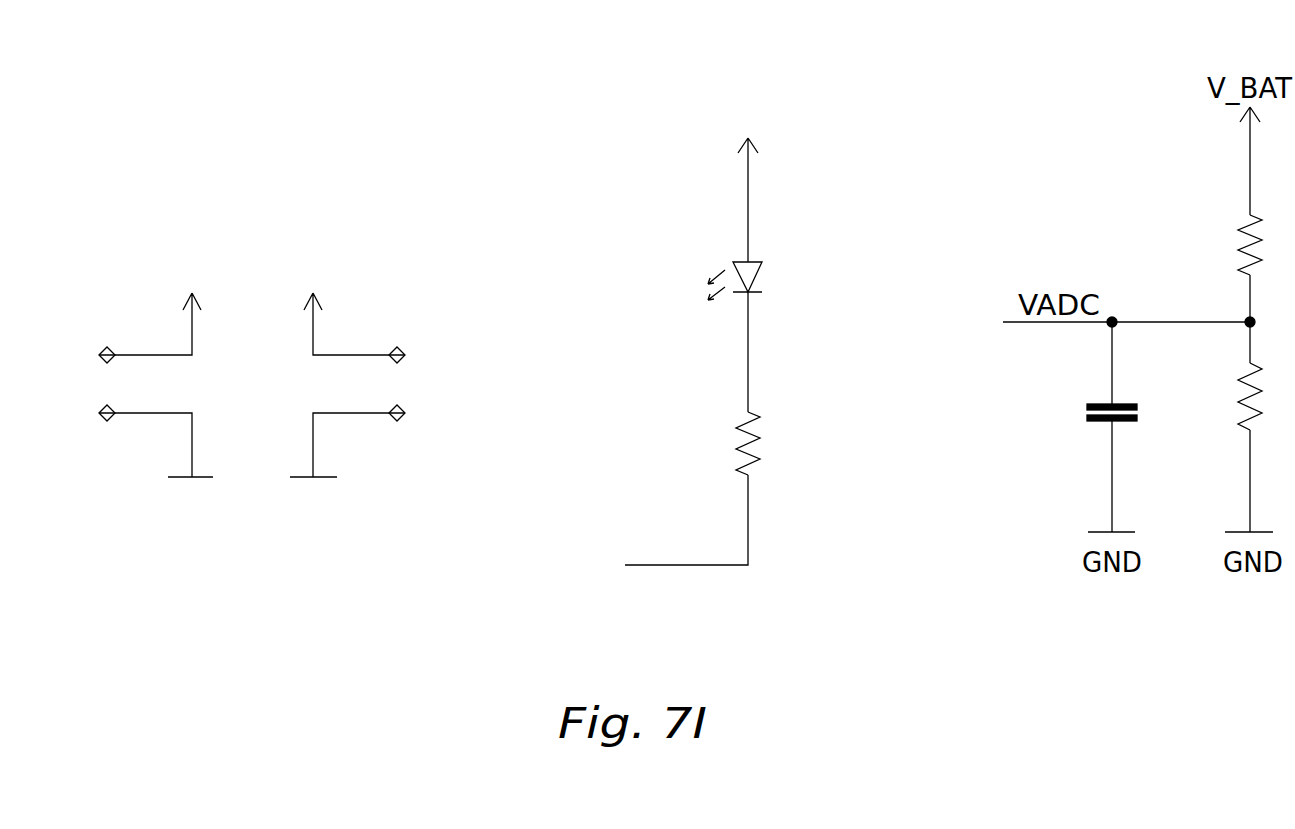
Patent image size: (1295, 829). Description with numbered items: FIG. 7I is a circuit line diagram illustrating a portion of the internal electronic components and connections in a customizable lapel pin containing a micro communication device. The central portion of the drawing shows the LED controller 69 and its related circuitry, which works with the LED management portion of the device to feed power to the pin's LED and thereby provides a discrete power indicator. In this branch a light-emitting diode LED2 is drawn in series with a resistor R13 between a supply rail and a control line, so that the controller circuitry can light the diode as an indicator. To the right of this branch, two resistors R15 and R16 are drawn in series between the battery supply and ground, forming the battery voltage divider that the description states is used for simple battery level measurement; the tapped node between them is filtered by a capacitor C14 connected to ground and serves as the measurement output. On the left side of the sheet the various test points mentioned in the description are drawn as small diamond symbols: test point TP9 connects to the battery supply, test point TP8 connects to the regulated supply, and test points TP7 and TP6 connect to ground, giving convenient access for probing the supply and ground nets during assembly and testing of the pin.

The LED controller 69 is at (700, 335).
The white LED IN-S63AT5UW LED2 is at (771, 221).
The 330 ohm LED series resistor R13 is at (747, 451).
The 10K divider resistor R15 is at (1247, 253).
The 10K divider resistor R16 is at (1249, 402).
The 1000pf filter capacitor C14 is at (1070, 427).
The V_BAT test point TP9 is at (143, 312).
The GND test point TP7 is at (129, 458).
The 3.3V test point TP8 is at (380, 312).
The GND test point TP6 is at (376, 458).